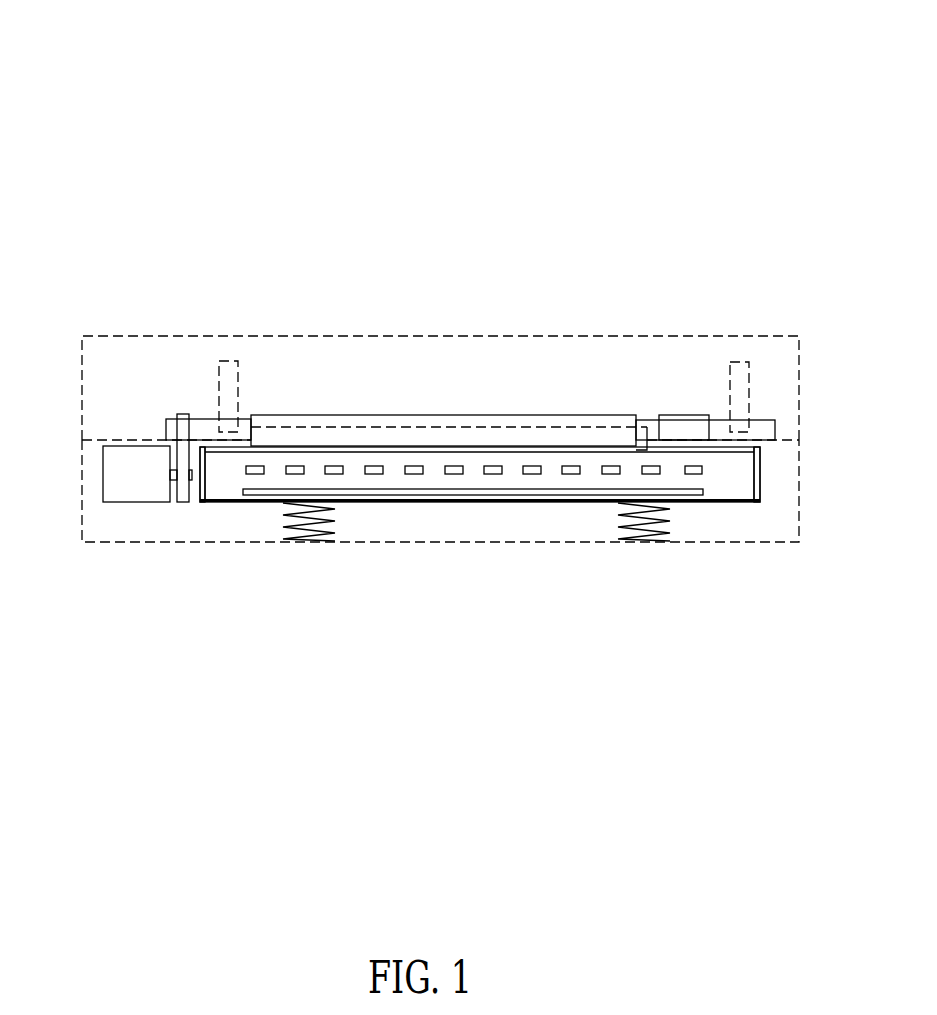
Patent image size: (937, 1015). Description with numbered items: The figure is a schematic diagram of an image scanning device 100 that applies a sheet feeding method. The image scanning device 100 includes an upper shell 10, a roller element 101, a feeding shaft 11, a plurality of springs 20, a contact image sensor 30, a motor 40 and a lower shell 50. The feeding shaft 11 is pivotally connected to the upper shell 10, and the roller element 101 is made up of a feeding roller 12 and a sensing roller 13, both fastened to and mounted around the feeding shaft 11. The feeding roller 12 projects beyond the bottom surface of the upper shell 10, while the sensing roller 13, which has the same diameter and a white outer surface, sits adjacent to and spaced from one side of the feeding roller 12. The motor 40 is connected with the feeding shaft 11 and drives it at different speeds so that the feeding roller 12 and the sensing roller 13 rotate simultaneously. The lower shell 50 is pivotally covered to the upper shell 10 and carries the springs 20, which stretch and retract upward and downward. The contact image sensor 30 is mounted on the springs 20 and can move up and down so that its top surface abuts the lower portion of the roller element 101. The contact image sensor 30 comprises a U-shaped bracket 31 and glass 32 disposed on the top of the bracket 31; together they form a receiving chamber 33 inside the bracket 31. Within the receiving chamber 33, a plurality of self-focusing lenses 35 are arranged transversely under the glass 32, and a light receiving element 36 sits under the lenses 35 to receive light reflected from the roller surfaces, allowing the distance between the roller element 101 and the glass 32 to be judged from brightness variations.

The image scanning device 100 is at (93, 60).
The upper shell 10 is at (355, 336).
The feeding shaft 11 is at (205, 428).
The feeding roller 12 is at (472, 425).
The roller element 101 is at (555, 404).
The sensing roller 13 is at (686, 424).
The glass 32 is at (751, 440).
The motor 40 is at (113, 482).
The lower shell 50 is at (228, 542).
The springs 20 is at (313, 542).
The contact image sensor 30 is at (522, 522).
The bracket 31 is at (201, 487).
The receiving chamber 33 is at (742, 488).
The self-focusing lenses 35 is at (702, 470).
The light receiving element 36 is at (697, 497).